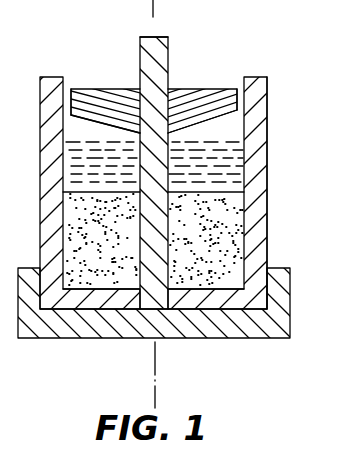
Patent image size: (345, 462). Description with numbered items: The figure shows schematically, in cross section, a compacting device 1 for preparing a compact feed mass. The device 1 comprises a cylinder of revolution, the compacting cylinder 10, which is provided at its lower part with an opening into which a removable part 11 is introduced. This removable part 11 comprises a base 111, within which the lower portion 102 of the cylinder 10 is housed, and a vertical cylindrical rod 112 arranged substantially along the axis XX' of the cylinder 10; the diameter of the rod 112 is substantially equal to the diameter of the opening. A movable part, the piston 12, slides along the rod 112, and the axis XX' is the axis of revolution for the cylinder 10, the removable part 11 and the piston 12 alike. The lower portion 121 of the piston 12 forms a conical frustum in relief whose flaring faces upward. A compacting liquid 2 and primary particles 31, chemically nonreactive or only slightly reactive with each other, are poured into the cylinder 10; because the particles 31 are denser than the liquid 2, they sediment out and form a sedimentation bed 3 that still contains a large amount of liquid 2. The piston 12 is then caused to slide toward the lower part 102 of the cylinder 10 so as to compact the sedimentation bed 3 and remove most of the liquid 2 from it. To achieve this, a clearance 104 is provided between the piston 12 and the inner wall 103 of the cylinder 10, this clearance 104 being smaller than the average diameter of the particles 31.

The compacting device 1 is at (257, 64).
The compacting cylinder 10 is at (268, 128).
The lower portion of the cylinder 102 is at (268, 248).
The inner wall of the cylinder 103 is at (72, 89).
The clearance 104 is at (237, 88).
The removable part 11 is at (170, 50).
The base 111 is at (272, 339).
The vertical cylindrical rod 112 is at (150, 37).
The piston 12 is at (104, 89).
The lower portion of the piston 121 is at (108, 125).
The compacting liquid 2 is at (214, 143).
The sedimentation bed 3 is at (214, 248).
The primary particles 31 is at (113, 212).